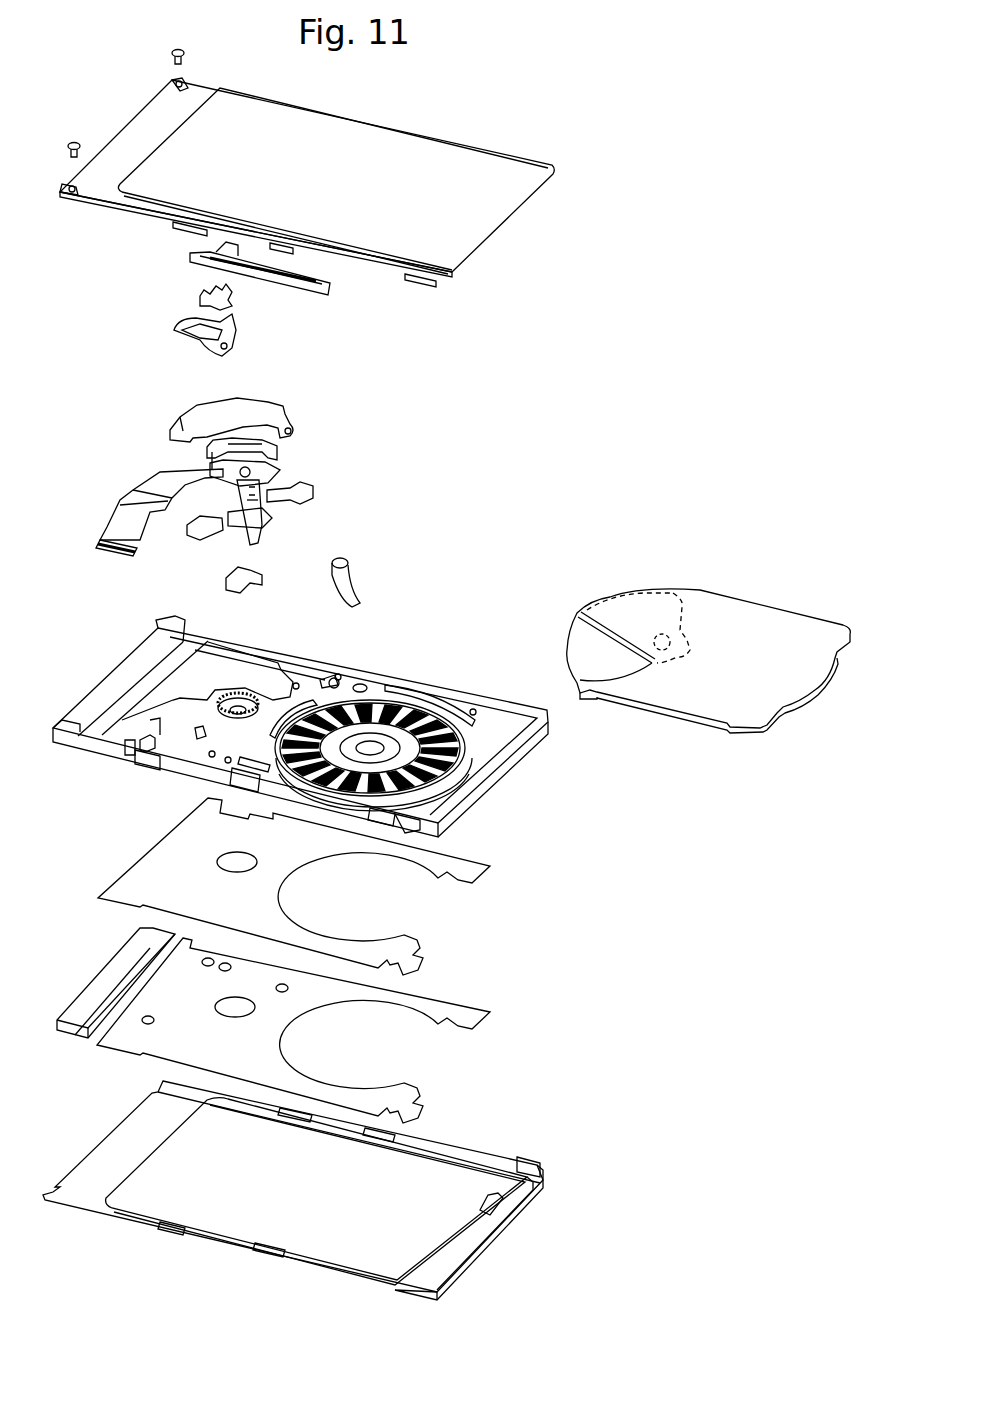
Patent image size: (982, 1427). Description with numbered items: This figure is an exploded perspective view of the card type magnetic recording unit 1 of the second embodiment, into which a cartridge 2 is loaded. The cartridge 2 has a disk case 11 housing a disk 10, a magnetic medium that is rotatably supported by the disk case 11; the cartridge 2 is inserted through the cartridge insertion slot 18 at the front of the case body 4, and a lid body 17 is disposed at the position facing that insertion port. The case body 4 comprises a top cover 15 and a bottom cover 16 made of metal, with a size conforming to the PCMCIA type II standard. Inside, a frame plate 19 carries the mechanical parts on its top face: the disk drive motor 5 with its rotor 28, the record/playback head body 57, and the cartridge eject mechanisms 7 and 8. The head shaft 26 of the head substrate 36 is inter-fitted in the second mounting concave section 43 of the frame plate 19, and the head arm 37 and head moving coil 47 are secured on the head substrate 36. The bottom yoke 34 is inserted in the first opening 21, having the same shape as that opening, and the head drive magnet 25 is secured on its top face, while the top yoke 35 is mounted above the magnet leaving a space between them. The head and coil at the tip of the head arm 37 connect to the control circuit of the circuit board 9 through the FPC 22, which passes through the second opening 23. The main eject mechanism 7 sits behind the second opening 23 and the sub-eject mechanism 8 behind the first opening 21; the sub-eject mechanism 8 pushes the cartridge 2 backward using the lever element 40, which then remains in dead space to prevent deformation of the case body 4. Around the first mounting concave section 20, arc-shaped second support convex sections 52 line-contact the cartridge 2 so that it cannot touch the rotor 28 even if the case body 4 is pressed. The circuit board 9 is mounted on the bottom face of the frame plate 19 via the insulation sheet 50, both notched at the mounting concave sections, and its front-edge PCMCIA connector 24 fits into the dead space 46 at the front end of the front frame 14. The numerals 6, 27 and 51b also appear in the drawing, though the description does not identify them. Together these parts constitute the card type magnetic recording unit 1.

The magnetic recording unit 1 is at (713, 285).
The cartridge 2 is at (692, 619).
The case body 4 is at (453, 686).
The disk drive motor 5 is at (433, 694).
The head arm 6 is at (255, 503).
The main eject mechanism 7 is at (158, 316).
The sub-eject mechanism 8 is at (385, 590).
The circuit board 9 is at (465, 1012).
The disk 10 is at (585, 650).
The disk case 11 is at (715, 615).
The front frame 14 is at (518, 700).
The top cover 15 is at (470, 212).
The bottom cover 16 is at (460, 1182).
The lid body 17 is at (500, 1220).
The cartridge insertion slot 18 is at (394, 740).
The frame plate 19 is at (375, 690).
The first mounting concave section 20 is at (468, 745).
The first opening 21 is at (237, 677).
The FPC 22 is at (108, 534).
The second opening 23 is at (120, 745).
The connector 24 is at (120, 970).
The head drive magnet 25 is at (200, 535).
The head shaft 26 is at (212, 452).
The motor ring 27 is at (442, 776).
The rotor 28 is at (440, 778).
The bottom yoke 34 is at (205, 680).
The top yoke 35 is at (258, 410).
The head substrate 36 is at (258, 468).
The head arm 37 is at (258, 542).
The lever element 40 is at (345, 583).
The second mounting concave section 43 is at (218, 735).
The dead space 46 is at (115, 690).
The head moving coil 47 is at (275, 448).
The insulation sheet 50 is at (470, 870).
The boss 51b is at (362, 684).
The second support convex sections 52 is at (305, 700).
The record/playback head body 57 is at (322, 417).